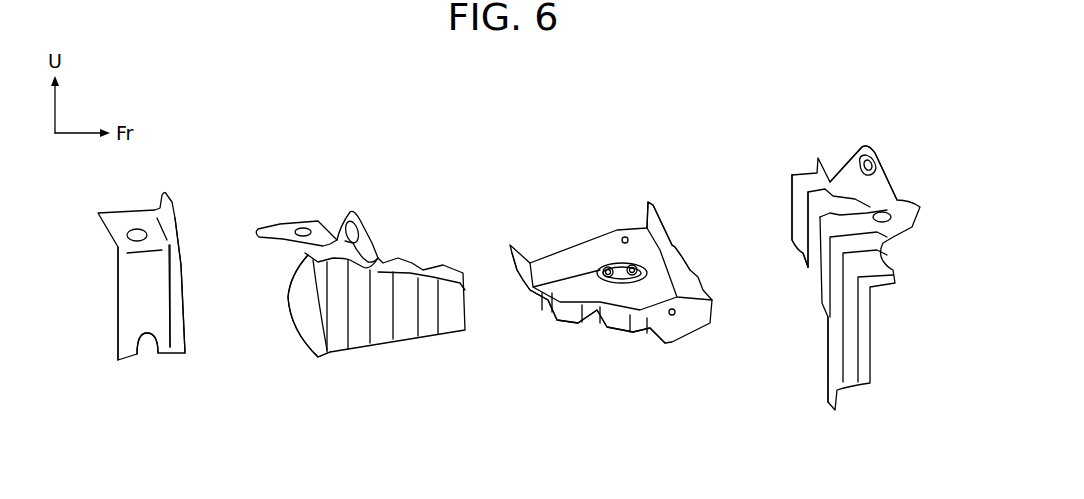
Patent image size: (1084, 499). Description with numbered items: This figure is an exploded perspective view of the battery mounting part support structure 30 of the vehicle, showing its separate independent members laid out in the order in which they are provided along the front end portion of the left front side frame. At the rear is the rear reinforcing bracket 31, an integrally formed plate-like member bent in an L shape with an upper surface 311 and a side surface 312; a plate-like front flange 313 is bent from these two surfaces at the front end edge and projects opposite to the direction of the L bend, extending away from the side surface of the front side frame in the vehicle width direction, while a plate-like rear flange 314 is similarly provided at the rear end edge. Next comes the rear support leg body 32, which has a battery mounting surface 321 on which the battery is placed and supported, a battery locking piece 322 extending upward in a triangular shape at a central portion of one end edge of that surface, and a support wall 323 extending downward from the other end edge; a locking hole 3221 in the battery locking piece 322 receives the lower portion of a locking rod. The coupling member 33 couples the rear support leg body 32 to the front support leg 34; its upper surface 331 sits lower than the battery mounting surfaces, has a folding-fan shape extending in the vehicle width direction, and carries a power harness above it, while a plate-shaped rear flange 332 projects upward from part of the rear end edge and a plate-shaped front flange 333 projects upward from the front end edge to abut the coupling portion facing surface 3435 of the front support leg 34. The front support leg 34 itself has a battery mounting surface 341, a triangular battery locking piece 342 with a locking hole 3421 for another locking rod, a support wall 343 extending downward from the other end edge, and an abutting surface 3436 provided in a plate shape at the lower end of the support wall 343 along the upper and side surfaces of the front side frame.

The battery mounting part support structure 30 is at (858, 89).
The rear reinforcing bracket 31 is at (182, 182).
The upper surface 311 is at (133, 229).
The side surface 312 is at (143, 320).
The front flange 313 is at (187, 312).
The rear flange 314 is at (116, 294).
The rear support leg body 32 is at (421, 224).
The battery mounting surface 321 is at (258, 232).
The battery locking piece 322 is at (358, 210).
The locking hole 3221 is at (338, 230).
The support wall 323 is at (308, 257).
The coupling member 33 is at (544, 215).
The upper surface 331 is at (620, 263).
The rear flange 332 is at (573, 322).
The front flange 333 is at (683, 245).
The front support leg 34 is at (899, 329).
The battery mounting surface 341 is at (881, 236).
The battery locking piece 342 is at (857, 148).
The locking hole 3421 is at (869, 165).
The support wall 343 is at (797, 223).
The coupling portion facing surface 3435 is at (811, 267).
The abutting surface 3436 is at (829, 317).